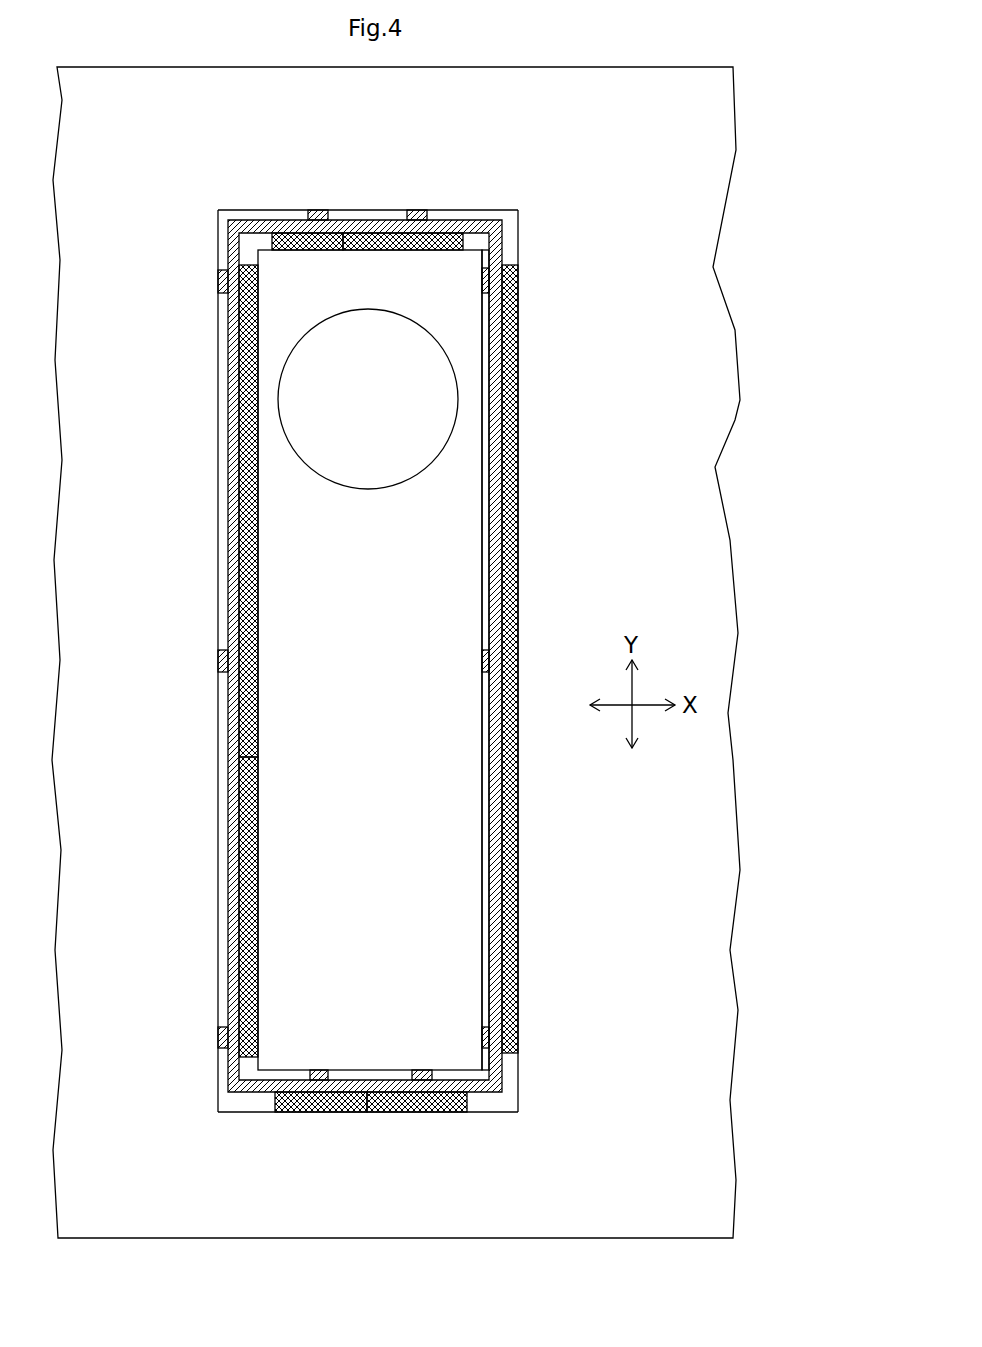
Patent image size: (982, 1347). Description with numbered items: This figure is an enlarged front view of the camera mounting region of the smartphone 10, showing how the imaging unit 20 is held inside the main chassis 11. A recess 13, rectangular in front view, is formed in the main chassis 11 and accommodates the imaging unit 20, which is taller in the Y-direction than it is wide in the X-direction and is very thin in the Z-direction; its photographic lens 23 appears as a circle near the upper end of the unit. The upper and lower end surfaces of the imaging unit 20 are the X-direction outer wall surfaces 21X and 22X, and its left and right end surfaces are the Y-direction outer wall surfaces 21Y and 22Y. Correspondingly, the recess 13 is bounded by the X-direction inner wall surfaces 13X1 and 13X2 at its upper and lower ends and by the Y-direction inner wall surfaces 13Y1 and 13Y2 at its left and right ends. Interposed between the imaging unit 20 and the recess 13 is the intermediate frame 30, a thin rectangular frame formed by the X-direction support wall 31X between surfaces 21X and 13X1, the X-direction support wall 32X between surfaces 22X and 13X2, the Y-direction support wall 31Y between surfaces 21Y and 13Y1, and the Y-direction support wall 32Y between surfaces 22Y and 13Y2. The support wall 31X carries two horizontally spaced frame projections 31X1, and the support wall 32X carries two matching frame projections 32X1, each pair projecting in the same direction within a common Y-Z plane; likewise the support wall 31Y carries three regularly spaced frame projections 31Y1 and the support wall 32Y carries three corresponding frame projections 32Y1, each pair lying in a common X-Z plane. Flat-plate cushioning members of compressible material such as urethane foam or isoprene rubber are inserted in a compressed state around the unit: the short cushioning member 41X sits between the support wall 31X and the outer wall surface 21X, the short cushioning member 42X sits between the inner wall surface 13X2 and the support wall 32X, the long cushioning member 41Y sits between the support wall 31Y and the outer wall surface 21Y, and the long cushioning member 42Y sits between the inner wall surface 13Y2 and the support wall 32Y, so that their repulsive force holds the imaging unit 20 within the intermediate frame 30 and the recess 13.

The smartphone 10 is at (432, 652).
The main chassis 11 is at (690, 470).
The recess 13 is at (386, 668).
The X-direction inner wall surface 13X1 is at (515, 210).
The X-direction inner wall surface 13X2 is at (232, 1107).
The Y-direction inner wall surface 13Y1 is at (220, 1100).
The Y-direction inner wall surface 13Y2 is at (510, 305).
The imaging unit 20 is at (445, 528).
The X-direction outer wall surface 21X is at (352, 232).
The Y-direction outer wall surface 21Y is at (256, 757).
The X-direction outer wall surface 22X is at (463, 1073).
The Y-direction outer wall surface 22Y is at (480, 782).
The photographic lens 23 is at (435, 375).
The intermediate frame 30 is at (373, 652).
The X-direction support wall 31X is at (356, 181).
The frame projection 31X1 is at (316, 211).
The Y-direction support wall 31Y is at (174, 656).
The frame projection 31Y1 is at (221, 282).
The X-direction support wall 32X is at (365, 1093).
The frame projection 32X1 is at (418, 1070).
The Y-direction support wall 32Y is at (510, 656).
The frame projection 32Y1 is at (483, 285).
The short cushioning member 41X is at (311, 251).
The long cushioning member 41Y is at (243, 847).
The short cushioning member 42X is at (312, 1112).
The long cushioning member 42Y is at (512, 866).